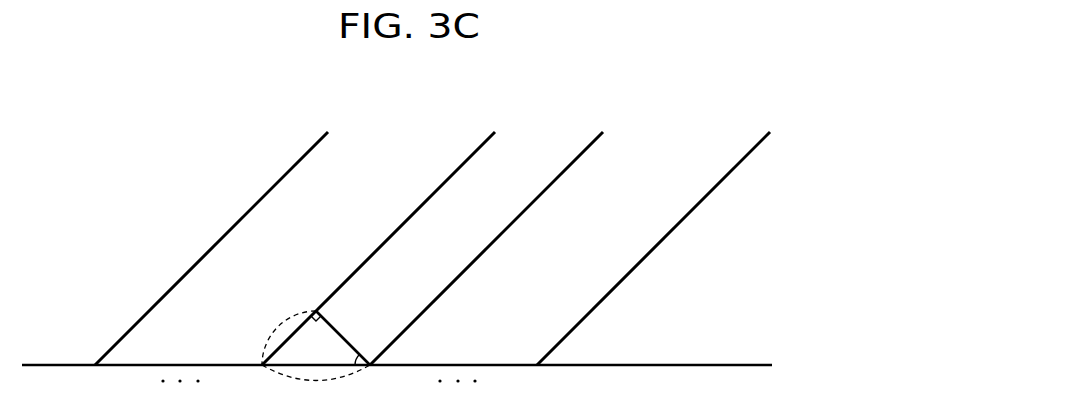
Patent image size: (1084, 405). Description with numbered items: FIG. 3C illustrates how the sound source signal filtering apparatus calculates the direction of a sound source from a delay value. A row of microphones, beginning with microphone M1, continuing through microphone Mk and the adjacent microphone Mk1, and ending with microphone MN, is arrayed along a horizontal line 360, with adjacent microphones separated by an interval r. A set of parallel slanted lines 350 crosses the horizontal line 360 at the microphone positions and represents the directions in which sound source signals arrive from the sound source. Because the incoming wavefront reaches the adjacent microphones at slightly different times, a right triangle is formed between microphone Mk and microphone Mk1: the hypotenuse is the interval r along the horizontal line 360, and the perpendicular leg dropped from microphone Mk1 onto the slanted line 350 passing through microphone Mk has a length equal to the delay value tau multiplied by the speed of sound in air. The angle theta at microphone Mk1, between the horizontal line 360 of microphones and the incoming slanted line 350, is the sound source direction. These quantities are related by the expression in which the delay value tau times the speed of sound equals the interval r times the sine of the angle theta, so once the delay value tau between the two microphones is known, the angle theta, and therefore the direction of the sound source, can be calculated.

The slanted lines 350 is at (745, 157).
The horizontal line 360 is at (712, 365).
The delay value tau is at (301, 336).
The angle theta is at (344, 354).
The interval between the microphones r is at (316, 384).
The microphone M1 is at (95, 382).
The microphone Mk is at (259, 382).
The microphone Mk1 is at (379, 382).
The microphone MN is at (538, 382).